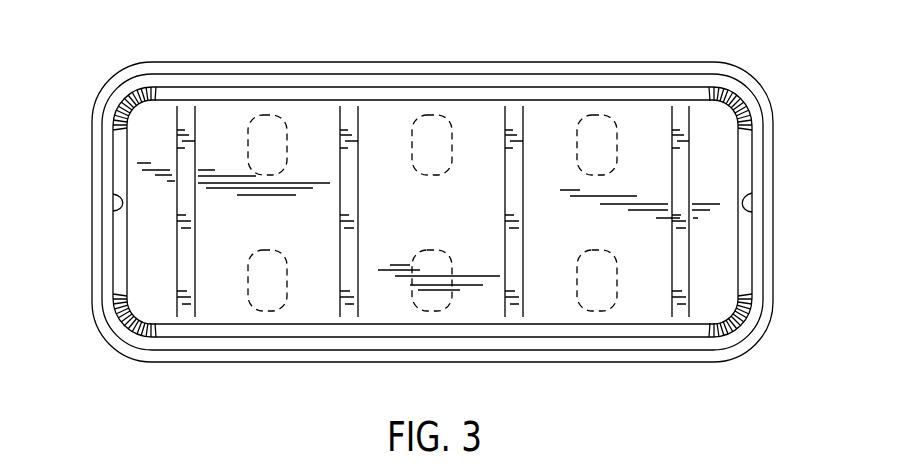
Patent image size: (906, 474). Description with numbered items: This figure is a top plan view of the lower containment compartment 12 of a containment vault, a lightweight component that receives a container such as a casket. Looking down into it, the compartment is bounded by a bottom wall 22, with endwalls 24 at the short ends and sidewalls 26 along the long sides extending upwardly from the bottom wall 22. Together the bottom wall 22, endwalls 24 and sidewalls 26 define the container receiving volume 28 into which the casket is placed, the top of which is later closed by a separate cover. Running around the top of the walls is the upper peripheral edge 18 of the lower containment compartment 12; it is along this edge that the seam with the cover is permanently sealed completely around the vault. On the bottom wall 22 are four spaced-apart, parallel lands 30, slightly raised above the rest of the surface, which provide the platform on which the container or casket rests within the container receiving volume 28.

The lower containment compartment 12 is at (97, 54).
The upper peripheral edge 18 is at (752, 83).
The bottom wall 22 is at (722, 263).
The endwalls 24 is at (113, 195).
The sidewalls 26 is at (425, 95).
The container receiving volume 28 is at (472, 142).
The lands 30 is at (187, 203).